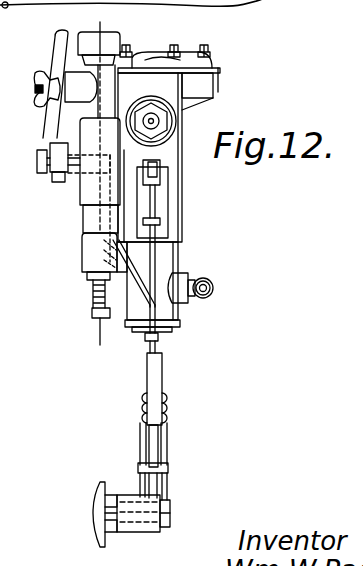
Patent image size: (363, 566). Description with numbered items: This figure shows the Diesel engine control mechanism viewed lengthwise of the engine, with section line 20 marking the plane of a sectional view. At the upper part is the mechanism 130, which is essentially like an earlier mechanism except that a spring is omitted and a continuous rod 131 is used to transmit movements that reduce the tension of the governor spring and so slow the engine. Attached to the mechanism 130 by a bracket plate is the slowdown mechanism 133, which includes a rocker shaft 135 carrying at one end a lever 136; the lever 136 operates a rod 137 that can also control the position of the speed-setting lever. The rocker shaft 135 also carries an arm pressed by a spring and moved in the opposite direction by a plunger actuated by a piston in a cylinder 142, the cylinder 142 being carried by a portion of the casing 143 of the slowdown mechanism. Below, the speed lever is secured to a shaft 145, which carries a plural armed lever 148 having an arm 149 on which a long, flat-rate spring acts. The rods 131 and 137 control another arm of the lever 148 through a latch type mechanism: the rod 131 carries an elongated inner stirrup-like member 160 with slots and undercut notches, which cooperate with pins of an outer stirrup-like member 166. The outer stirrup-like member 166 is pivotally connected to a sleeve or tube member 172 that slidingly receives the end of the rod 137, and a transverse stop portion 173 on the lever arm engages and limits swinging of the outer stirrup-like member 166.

The section line 20- 20 is at (83, 22).
The mechanism 130 is at (224, 94).
The continuous rod 131 is at (153, 261).
The slowdown mechanism 133 is at (78, 198).
The rocker shaft 135 is at (38, 160).
The lever 136 is at (60, 150).
The rod 137 is at (158, 337).
The cylinder 142 is at (117, 40).
The casing 143 is at (82, 63).
The shaft 145 is at (138, 520).
The plural armed lever 148 is at (155, 487).
The arm 149 is at (156, 450).
The inner stirrup-like member 160 is at (168, 408).
The outer stirrup-like member 166 is at (140, 438).
The sleeve or tube member 172 is at (161, 368).
The transverse stop portion 173 is at (140, 467).